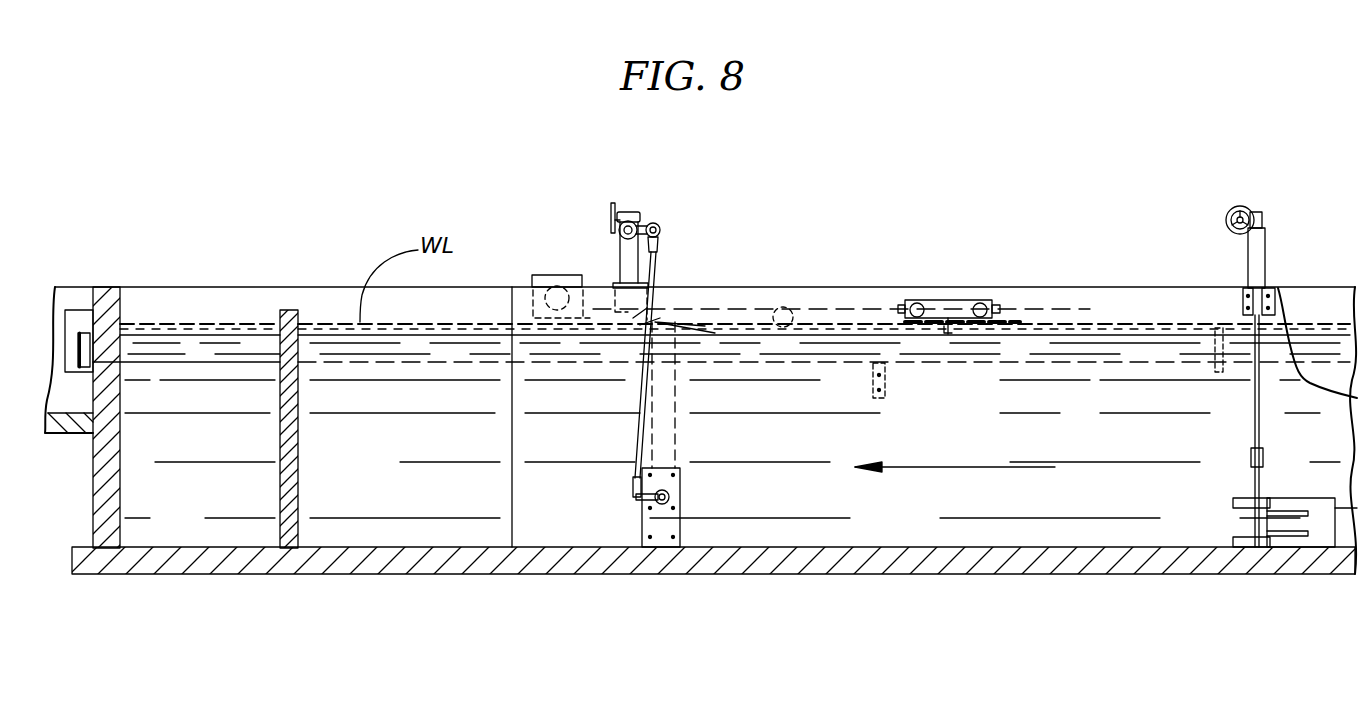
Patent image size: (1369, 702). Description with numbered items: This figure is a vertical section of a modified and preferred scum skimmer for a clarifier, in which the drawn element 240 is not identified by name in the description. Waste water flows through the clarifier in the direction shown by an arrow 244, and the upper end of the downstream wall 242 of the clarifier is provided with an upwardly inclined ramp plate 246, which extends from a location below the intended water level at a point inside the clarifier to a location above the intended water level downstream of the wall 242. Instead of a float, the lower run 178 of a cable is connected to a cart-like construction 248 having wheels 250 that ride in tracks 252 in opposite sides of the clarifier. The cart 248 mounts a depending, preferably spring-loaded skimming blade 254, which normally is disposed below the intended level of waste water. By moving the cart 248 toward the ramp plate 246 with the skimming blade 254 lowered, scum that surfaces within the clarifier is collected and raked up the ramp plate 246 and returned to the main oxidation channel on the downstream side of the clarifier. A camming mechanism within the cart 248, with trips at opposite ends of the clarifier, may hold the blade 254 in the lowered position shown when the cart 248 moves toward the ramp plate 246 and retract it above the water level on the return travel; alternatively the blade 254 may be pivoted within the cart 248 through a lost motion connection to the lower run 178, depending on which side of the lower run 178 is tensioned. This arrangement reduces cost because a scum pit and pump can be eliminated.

The lower run 178 is at (1056, 310).
The skimming vane 240 is at (660, 323).
The downstream wall 242 is at (674, 440).
The arrow 244 is at (952, 468).
The ramp plate 246 is at (662, 322).
The cart 248 is at (955, 300).
The wheels 250 is at (926, 322).
The tracks 252 is at (783, 327).
The skimming blade 254 is at (950, 330).